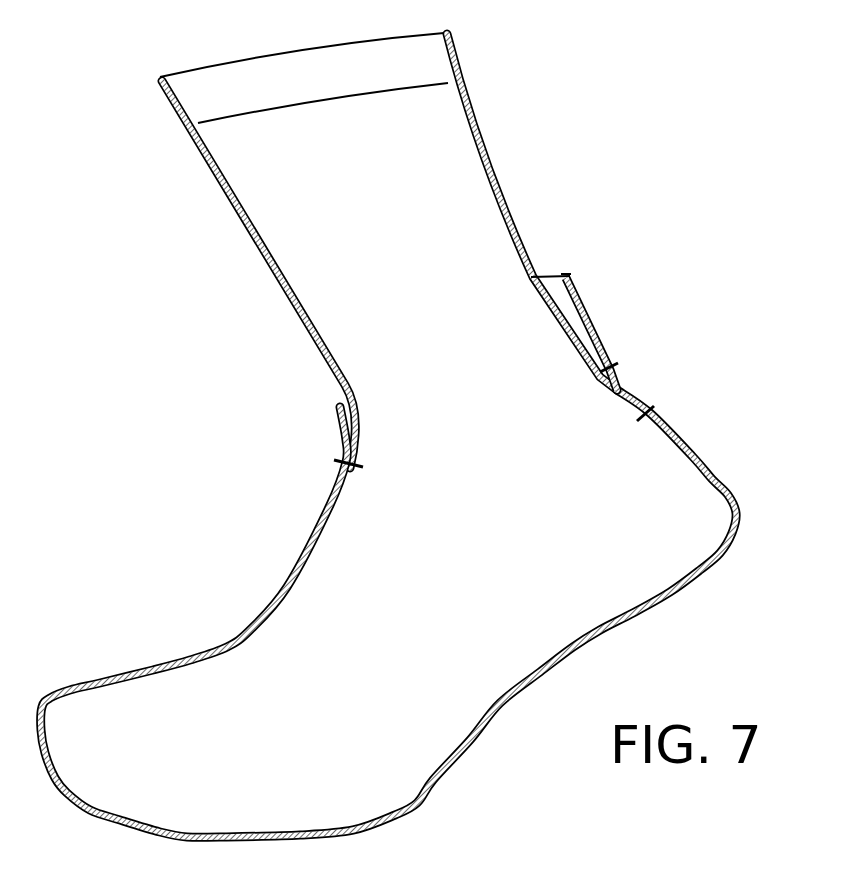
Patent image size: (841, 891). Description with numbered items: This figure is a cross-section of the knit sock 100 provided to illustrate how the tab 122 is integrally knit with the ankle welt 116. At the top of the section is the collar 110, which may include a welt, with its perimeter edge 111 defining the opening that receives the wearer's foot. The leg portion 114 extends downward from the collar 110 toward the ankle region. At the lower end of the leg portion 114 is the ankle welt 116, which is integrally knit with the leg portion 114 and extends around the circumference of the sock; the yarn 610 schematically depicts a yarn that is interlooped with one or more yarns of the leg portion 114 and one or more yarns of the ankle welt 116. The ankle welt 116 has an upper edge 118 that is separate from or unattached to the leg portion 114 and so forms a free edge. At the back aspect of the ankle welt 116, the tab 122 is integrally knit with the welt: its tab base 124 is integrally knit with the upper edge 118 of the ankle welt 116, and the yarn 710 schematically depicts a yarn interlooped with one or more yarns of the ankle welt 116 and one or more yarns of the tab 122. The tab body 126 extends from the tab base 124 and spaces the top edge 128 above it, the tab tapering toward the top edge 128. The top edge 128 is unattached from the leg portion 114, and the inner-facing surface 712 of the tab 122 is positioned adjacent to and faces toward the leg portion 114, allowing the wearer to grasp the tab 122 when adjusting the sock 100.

The knit sock 100 is at (389, 430).
The collar 110 is at (428, 60).
The perimeter edge 111 is at (278, 52).
The leg portion 114 is at (332, 402).
The ankle welt 116 is at (320, 437).
The upper edge 118 is at (608, 362).
The tab 122 is at (620, 275).
The tab base 124 is at (603, 384).
The tab body 126 is at (604, 305).
The top edge 128 is at (565, 275).
The yarn 610 is at (362, 466).
The yarn 710 is at (587, 378).
The inner-facing surface 712 is at (543, 277).